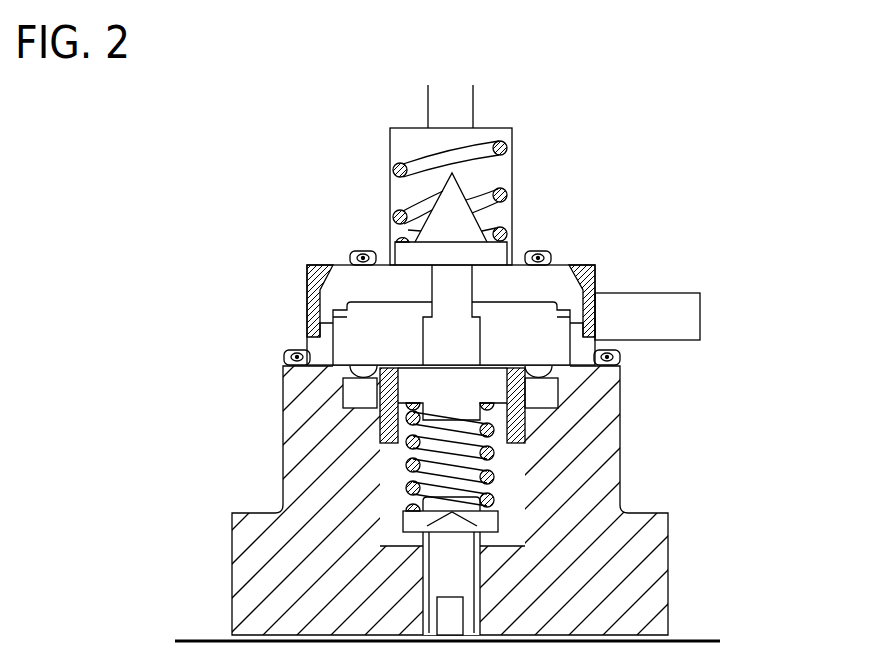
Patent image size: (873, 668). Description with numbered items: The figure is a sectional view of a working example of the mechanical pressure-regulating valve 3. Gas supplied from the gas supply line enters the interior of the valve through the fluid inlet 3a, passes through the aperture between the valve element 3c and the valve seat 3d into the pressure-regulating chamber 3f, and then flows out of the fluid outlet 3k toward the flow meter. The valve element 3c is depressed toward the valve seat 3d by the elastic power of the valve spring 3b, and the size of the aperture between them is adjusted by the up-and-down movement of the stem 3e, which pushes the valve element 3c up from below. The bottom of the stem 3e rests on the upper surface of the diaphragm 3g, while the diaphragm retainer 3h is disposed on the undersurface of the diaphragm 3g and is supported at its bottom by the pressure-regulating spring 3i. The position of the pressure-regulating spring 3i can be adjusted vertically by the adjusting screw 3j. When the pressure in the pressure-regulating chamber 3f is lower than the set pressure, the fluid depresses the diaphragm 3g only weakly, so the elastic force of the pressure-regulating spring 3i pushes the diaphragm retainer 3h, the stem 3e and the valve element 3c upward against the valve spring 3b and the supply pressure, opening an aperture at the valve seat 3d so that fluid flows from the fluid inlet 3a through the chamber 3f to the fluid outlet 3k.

The mechanical pressure-regulating valve 3 is at (600, 178).
The fluid inlet 3a is at (436, 103).
The valve spring 3b is at (488, 148).
The valve element 3c is at (448, 188).
The valve seat 3d is at (558, 272).
The stem 3e is at (443, 278).
The pressure-regulating chamber 3f is at (352, 347).
The diaphragm 3g is at (557, 367).
The diaphragm retainer 3h is at (478, 388).
The pressure-regulating spring 3i is at (417, 488).
The adjusting screw 3j is at (437, 618).
The fluid outlet 3k is at (681, 333).